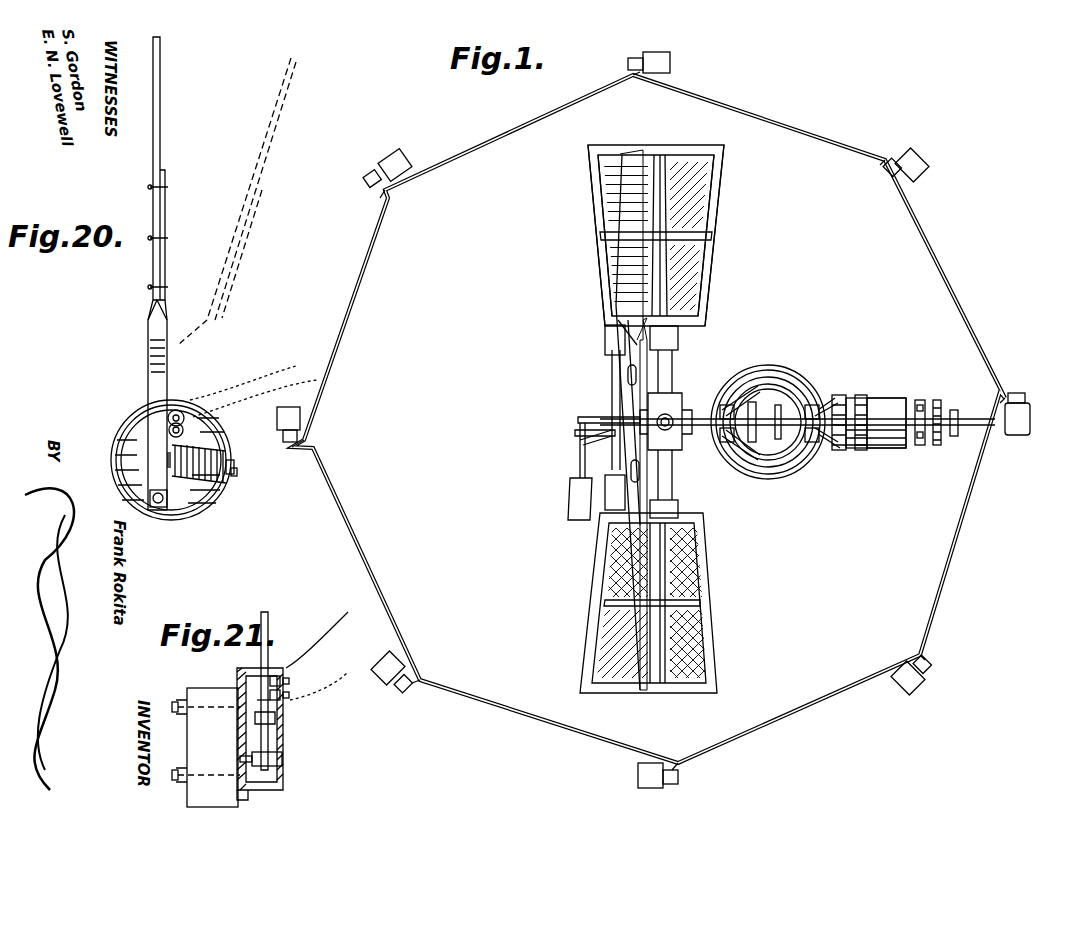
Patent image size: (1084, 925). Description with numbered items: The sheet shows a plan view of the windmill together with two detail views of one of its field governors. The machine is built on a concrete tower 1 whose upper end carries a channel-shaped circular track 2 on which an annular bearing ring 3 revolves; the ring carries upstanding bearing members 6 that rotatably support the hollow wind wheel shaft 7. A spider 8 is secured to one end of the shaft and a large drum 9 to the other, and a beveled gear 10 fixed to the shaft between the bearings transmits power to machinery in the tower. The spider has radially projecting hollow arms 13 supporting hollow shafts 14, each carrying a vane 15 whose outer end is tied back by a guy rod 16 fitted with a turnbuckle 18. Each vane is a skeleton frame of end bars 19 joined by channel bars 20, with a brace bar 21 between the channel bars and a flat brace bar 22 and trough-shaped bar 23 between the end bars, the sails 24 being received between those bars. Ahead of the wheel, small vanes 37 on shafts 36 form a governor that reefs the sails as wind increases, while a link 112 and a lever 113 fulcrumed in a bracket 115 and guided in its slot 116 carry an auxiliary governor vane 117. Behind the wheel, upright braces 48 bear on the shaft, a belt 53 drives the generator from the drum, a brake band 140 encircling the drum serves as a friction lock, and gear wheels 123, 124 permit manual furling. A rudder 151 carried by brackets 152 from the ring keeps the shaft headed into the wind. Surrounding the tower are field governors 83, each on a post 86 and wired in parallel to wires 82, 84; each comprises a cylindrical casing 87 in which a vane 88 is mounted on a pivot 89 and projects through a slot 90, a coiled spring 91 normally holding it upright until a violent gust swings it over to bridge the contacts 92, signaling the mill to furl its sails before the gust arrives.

In FIG. 1, the tower 1 is at (753, 360).
In FIG. 1, the circular track 2 is at (768, 480).
In FIG. 1, the annular bearing ring 3 is at (793, 392).
In FIG. 1, the bearing members 6 is at (720, 410).
In FIG. 1, the wind wheel shaft 7 is at (762, 420).
In FIG. 1, the spider 8 is at (675, 428).
In FIG. 1, the drum 9 is at (890, 398).
In FIG. 1, the beveled gear 10 is at (778, 405).
In FIG. 1, the hollow arms 13 is at (665, 393).
In FIG. 1, the hollow shafts 14 is at (666, 355).
In FIG. 1, the vane 15 is at (595, 158).
In FIG. 1, the guy rod 16 is at (612, 312).
In FIG. 1, the turnbuckle 18 is at (628, 377).
In FIG. 1, the end bars 19 is at (690, 147).
In FIG. 1, the channel bars 20 is at (597, 222).
In FIG. 1, the brace bar 21 is at (696, 240).
In FIG. 1, the flat brace bar 22 is at (660, 553).
In FIG. 1, the trough-shaped bar 23 is at (667, 283).
In FIG. 1, the sails 24 is at (700, 190).
In FIG. 1, the shafts 36 is at (612, 388).
In FIG. 1, the vanes 37 is at (605, 345).
In FIG. 1, the upright braces 48 is at (919, 446).
In FIG. 1, the belt 53 is at (863, 395).
In FIG. 1, the wire 82 is at (927, 230).
In FIG. 20, the wire 82 is at (296, 366).
In FIG. 21, the wire 82 is at (350, 612).
In FIG. 1, the field governor 83 is at (633, 57).
In FIG. 20, the field governor 83 is at (110, 462).
In FIG. 21, the field governor 83 is at (284, 743).
In FIG. 1, the wire 84 is at (915, 233).
In FIG. 20, the wire 84 is at (316, 378).
In FIG. 21, the wire 84 is at (340, 708).
In FIG. 1, the post 86 is at (672, 62).
In FIG. 21, the post 86 is at (187, 690).
In FIG. 20, the cylindrical casing 87 is at (120, 428).
In FIG. 21, the cylindrical casing 87 is at (284, 792).
In FIG. 1, the vane 88 is at (628, 64).
In FIG. 20, the vane 88 is at (150, 345).
In FIG. 21, the vane 88 is at (268, 650).
In FIG. 20, the pivot 89 is at (160, 508).
In FIG. 21, the pivot 89 is at (284, 764).
In FIG. 20, the slot 90 is at (185, 398).
In FIG. 21, the slot 90 is at (258, 678).
In FIG. 20, the coiled spring 91 is at (222, 455).
In FIG. 20, the contacts 92 is at (170, 428).
In FIG. 21, the contacts 92 is at (290, 694).
In FIG. 1, the link 112 is at (578, 418).
In FIG. 1, the lever 113 is at (580, 458).
In FIG. 1, the bracket 115 is at (575, 433).
In FIG. 1, the slot 116 is at (585, 443).
In FIG. 1, the vane 117 is at (570, 505).
In FIG. 1, the gear wheel 123 is at (955, 436).
In FIG. 1, the gear wheel 124 is at (940, 405).
In FIG. 1, the brake band 140 is at (840, 395).
In FIG. 1, the rudder 151 is at (885, 440).
In FIG. 1, the brackets 152 is at (748, 380).